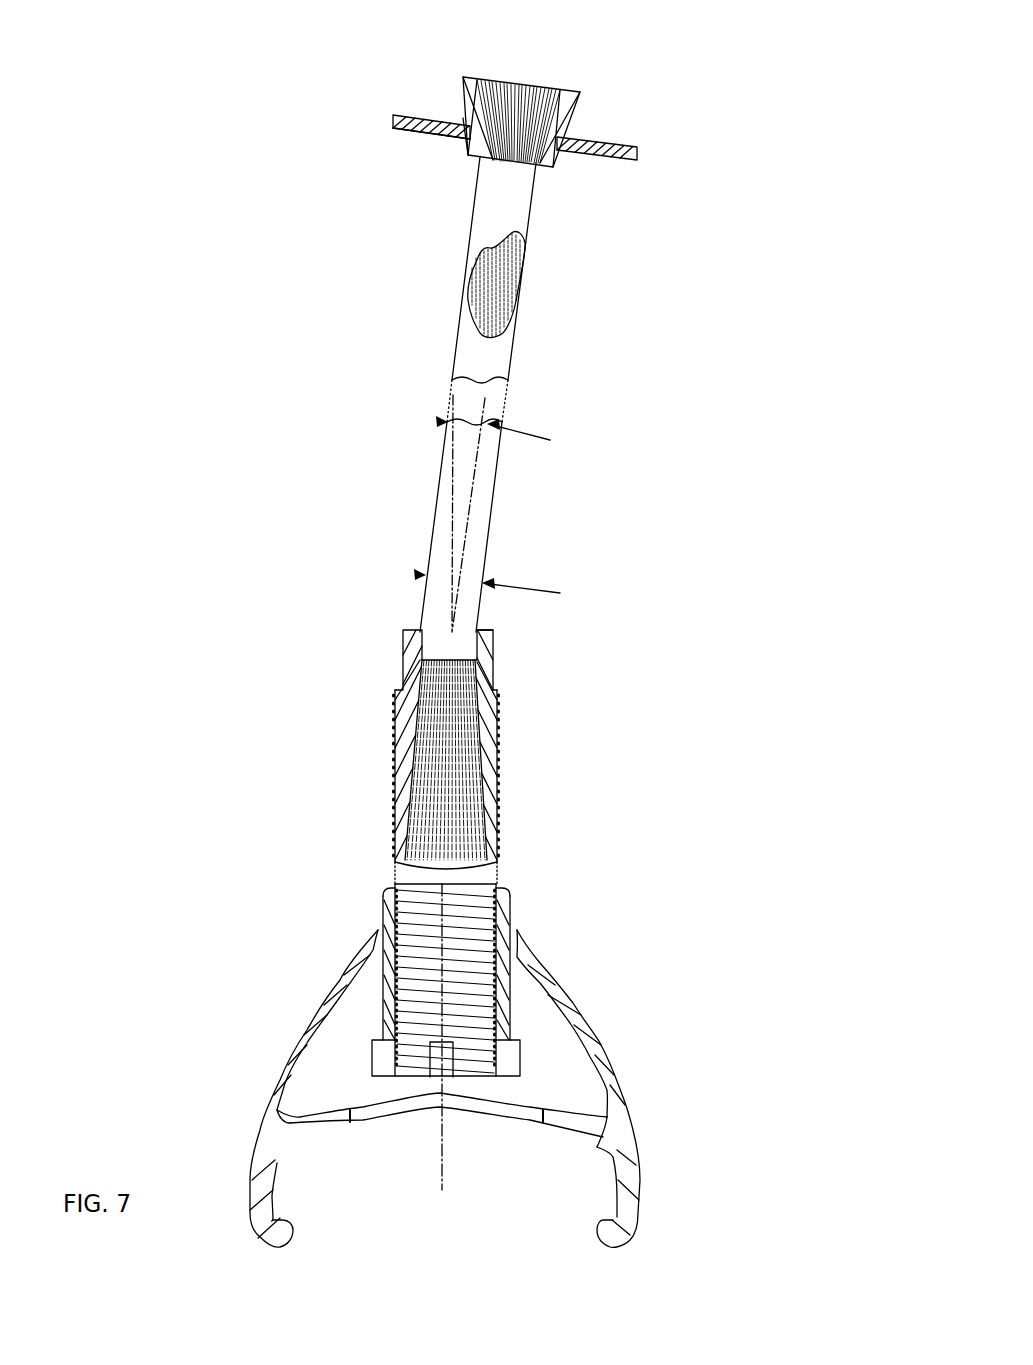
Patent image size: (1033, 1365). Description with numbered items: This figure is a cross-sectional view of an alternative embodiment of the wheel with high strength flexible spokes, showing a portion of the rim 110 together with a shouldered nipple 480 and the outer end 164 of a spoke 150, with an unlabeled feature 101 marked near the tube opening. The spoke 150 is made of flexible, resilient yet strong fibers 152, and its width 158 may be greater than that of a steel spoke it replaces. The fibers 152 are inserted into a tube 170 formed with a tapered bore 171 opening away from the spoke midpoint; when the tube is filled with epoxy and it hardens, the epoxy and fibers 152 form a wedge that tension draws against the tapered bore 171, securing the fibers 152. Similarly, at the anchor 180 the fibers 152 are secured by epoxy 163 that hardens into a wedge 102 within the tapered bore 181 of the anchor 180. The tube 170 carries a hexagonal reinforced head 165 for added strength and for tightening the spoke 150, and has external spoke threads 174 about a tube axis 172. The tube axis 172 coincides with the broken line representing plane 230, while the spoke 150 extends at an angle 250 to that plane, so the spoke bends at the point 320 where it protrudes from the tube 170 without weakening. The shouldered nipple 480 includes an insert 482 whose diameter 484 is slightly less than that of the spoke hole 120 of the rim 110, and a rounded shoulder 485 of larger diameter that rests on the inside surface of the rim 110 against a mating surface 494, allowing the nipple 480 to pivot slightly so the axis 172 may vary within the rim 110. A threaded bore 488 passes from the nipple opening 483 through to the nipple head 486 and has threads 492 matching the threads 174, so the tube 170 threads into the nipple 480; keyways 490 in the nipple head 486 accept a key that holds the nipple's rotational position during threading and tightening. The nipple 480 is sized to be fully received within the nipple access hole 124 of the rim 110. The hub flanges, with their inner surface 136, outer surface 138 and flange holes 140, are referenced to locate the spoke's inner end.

The collar bore opening 101 is at (470, 657).
The wedge 102 is at (540, 200).
The rim 110 is at (623, 1133).
The spoke hole 120 is at (380, 945).
The nipple access hole 124 is at (540, 1123).
The inner surface 136 is at (407, 115).
The outer surface 138 is at (428, 138).
The flange hole 140 is at (462, 118).
The spoke 150 is at (388, 302).
The fibers 152 is at (447, 732).
The width 158 is at (416, 574).
The epoxy 163 is at (542, 78).
The outer end 164 is at (423, 642).
The hexagonal reinforced head 165 is at (400, 672).
The tube 170 is at (395, 792).
The tapered bore 171 is at (477, 743).
The tube axis 172 is at (442, 1147).
The external spoke threads 174 is at (497, 793).
The anchor 180 is at (590, 136).
The tapered bore 181 is at (480, 107).
The plane 230 is at (465, 500).
The angle 250 is at (440, 421).
The point 320 is at (486, 626).
The shouldered nipple 480 is at (631, 902).
The insert 482 is at (500, 942).
The nipple opening 483 is at (383, 885).
The diameter 484 is at (376, 915).
The shoulder 485 is at (515, 978).
The nipple head 486 is at (383, 1023).
The threaded bore 488 is at (428, 957).
The keyways 490 is at (507, 1063).
The threads 492 is at (460, 1047).
The mating surface 494 is at (513, 970).